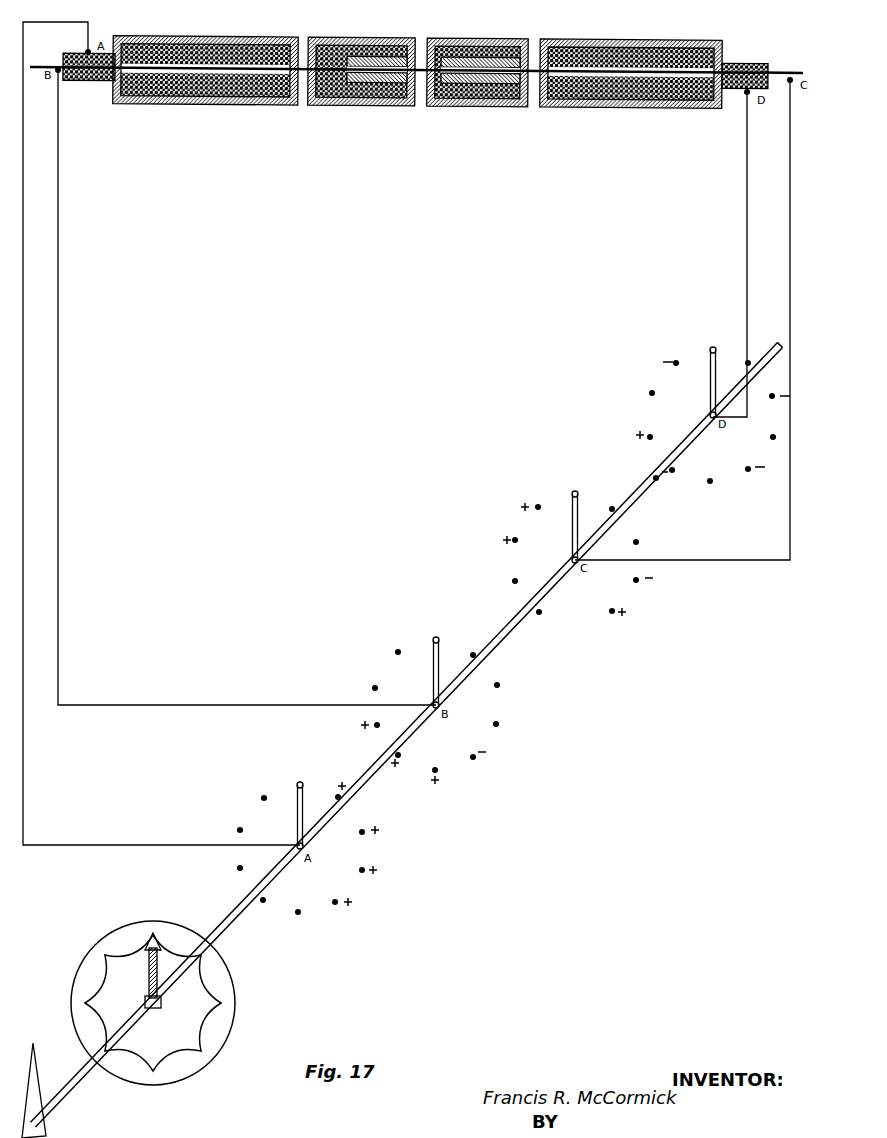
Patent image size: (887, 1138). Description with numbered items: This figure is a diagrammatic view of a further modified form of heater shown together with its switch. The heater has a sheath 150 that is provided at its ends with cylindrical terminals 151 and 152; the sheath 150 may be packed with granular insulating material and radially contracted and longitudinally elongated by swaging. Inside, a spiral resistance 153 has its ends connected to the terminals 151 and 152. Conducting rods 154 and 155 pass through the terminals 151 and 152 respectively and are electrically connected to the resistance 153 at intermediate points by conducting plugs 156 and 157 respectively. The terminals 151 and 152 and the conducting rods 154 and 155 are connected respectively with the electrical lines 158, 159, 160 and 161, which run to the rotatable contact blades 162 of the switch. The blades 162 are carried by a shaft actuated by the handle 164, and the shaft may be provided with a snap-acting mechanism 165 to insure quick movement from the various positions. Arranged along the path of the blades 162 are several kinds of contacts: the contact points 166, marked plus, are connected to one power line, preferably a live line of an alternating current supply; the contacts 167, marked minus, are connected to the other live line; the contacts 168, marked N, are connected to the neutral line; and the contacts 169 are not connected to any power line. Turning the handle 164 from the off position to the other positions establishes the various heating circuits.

The sheath 150 is at (368, 105).
The cylindrical terminal 151 is at (100, 82).
The cylindrical terminal 152 is at (737, 90).
The spiral resistance 153 is at (318, 103).
The conducting rod 154 is at (257, 75).
The conducting rod 155 is at (639, 95).
The conducting plug 156 is at (390, 95).
The conducting plug 157 is at (475, 90).
The electrical line 158 is at (22, 318).
The electrical line 159 is at (58, 322).
The electrical line 160 is at (746, 205).
The electrical line 161 is at (790, 220).
The rotatable contact blade 162 is at (297, 800).
The handle 164 is at (62, 1015).
The snap-acting mechanism 165 is at (148, 965).
The contact point 166 is at (338, 797).
The contact 167 is at (514, 580).
The contact 168 is at (540, 612).
The contact 169 is at (300, 782).